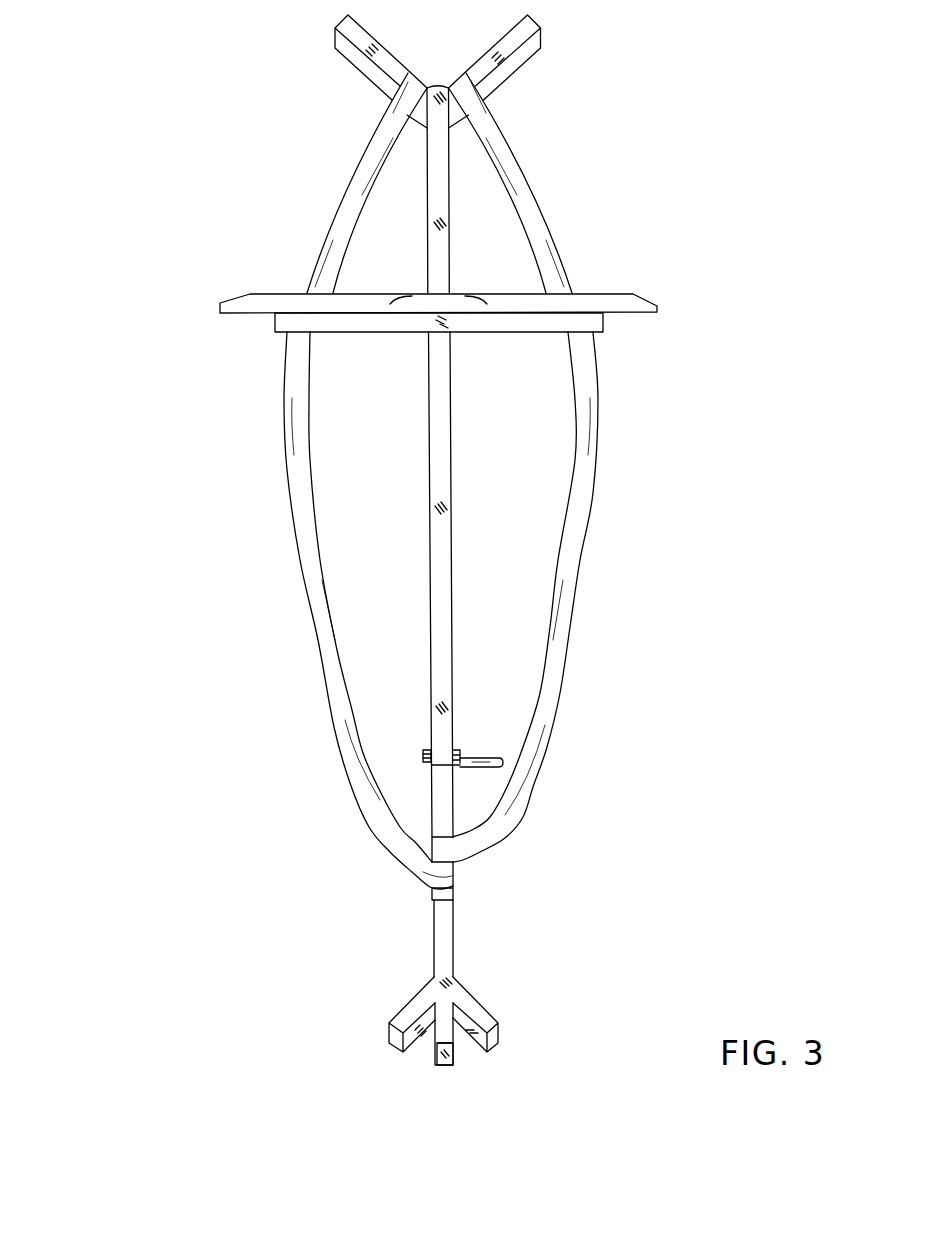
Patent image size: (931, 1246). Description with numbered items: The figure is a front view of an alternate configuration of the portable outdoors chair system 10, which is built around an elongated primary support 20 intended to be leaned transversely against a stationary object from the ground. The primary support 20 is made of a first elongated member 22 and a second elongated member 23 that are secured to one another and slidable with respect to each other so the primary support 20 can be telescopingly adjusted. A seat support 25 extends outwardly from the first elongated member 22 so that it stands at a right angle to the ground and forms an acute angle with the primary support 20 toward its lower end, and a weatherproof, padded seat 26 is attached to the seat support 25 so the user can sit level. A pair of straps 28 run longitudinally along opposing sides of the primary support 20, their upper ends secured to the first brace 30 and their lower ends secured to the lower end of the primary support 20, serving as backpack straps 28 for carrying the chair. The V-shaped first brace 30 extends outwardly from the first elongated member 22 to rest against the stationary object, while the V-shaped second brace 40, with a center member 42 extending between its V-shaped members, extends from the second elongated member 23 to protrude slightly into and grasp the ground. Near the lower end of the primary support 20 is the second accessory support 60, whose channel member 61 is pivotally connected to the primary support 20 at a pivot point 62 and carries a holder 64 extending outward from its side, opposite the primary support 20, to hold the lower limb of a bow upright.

The portable outdoors chair system 10 is at (152, 122).
The primary support 20 is at (452, 444).
The first elongated member 22 is at (427, 510).
The second elongated member 23 is at (455, 938).
The seat support 25 is at (400, 333).
The seat 26 is at (272, 292).
The straps 28 is at (303, 578).
The first brace 30 is at (343, 58).
The second brace 40 is at (413, 1000).
The center member 42 is at (435, 1037).
The second accessory support 60 is at (425, 748).
The channel member 61 is at (443, 765).
The pivot point 62 is at (427, 757).
The holder 64 is at (480, 757).